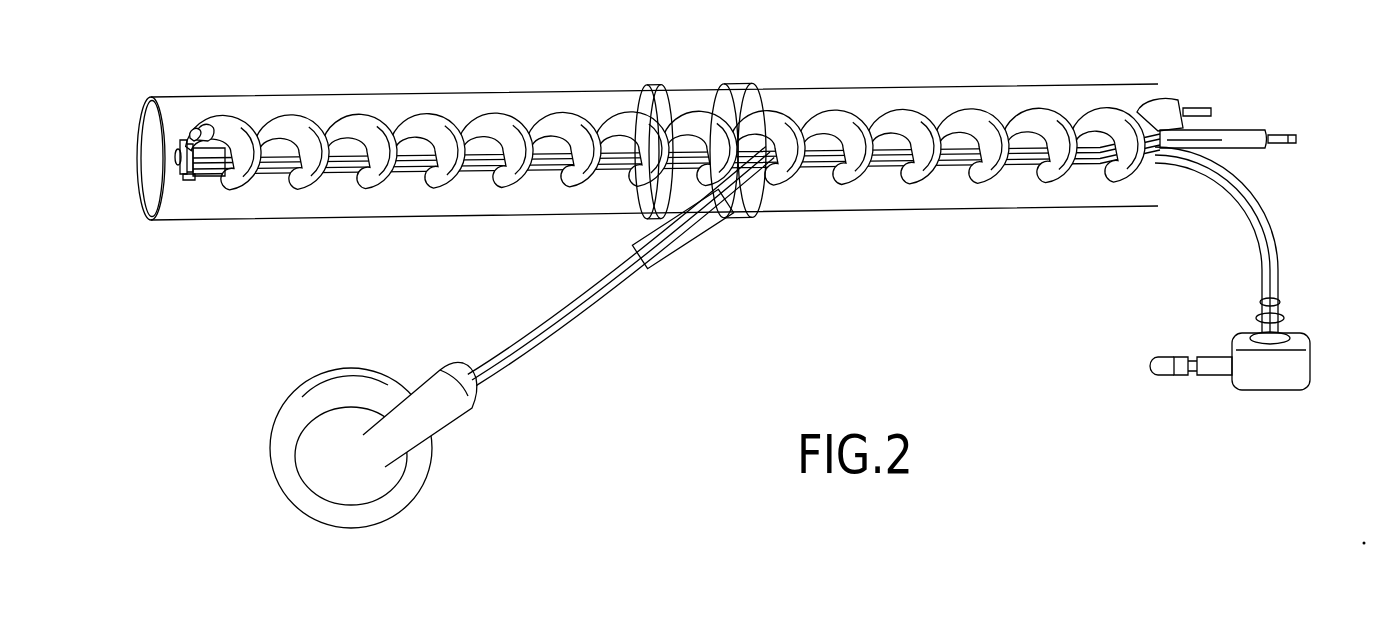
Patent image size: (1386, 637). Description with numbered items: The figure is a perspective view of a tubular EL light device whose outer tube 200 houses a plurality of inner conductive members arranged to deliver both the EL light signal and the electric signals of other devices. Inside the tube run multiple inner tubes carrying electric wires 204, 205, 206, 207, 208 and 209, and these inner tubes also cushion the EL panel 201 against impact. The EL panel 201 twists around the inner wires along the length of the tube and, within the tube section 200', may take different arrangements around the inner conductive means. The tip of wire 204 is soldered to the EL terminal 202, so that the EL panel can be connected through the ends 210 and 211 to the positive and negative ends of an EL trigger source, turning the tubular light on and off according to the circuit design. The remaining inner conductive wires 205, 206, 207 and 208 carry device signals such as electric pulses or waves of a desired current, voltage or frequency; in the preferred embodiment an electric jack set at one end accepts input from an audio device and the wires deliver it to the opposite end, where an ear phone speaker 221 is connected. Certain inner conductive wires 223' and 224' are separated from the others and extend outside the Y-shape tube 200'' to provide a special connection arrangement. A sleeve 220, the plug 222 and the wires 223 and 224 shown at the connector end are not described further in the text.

The tube 200 is at (899, 174).
The tube 200' is at (388, 120).
The Y-shape tube 200'' is at (719, 116).
The EL panel 201 is at (225, 122).
The EL terminal 202 is at (200, 134).
The electric wire 204 is at (198, 136).
The inner conductive wire 205 is at (182, 160).
The inner conductive wire 206 is at (180, 168).
The inner conductive wire 207 is at (190, 178).
The inner conductive wire 208 is at (197, 178).
The electric wire 209 is at (185, 150).
The end 210 is at (1196, 110).
The end 211 is at (1283, 139).
The cable sleeve 220 is at (670, 255).
The ear phone speaker 221 is at (436, 370).
The plug jack 222 is at (1267, 378).
The cable sheath 223 is at (1222, 245).
The inner conductive wire 223' is at (621, 284).
The wire 224 is at (1239, 244).
The inner conductive wire 224' is at (621, 266).